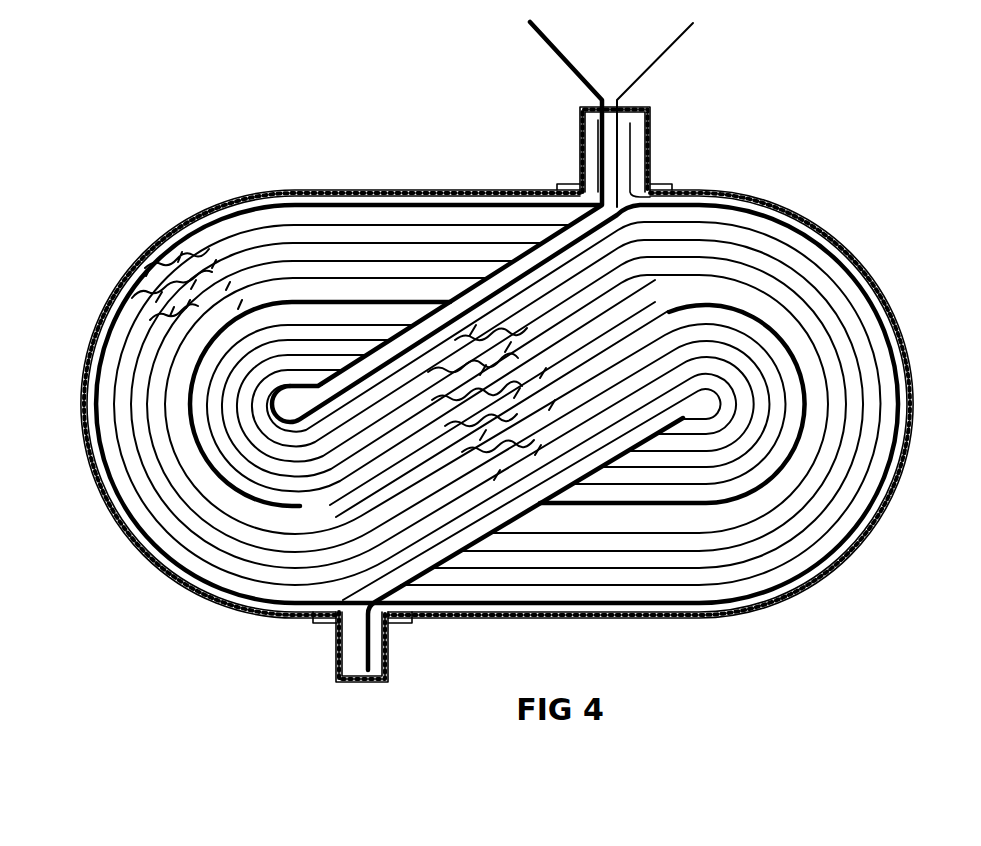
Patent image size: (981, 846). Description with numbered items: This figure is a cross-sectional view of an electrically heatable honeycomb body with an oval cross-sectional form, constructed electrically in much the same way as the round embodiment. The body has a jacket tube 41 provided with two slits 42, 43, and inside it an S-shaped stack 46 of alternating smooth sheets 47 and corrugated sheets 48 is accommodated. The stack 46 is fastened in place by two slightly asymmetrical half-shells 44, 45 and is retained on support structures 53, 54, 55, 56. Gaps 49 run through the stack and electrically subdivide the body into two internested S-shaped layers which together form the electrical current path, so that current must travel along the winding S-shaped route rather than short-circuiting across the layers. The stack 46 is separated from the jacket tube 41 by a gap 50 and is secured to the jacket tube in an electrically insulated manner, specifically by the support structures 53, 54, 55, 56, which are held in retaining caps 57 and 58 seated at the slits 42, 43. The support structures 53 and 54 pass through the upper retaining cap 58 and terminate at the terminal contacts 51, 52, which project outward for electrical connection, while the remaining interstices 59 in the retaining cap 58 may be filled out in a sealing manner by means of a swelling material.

The jacket tube 41 is at (214, 206).
The slit 42 is at (418, 622).
The slit 43 is at (650, 170).
The half-shell 44 is at (834, 246).
The half-shell 45 is at (100, 320).
The S-shaped stack 46 is at (296, 348).
The smooth sheets 47 is at (136, 272).
The corrugated sheets 48 is at (164, 246).
The gaps 49 is at (322, 468).
The gap 50 is at (800, 580).
The terminal contact 51 is at (548, 46).
The terminal contact 52 is at (686, 36).
The support structure 53 is at (382, 300).
The support structure 54 is at (370, 352).
The support structure 55 is at (604, 432).
The support structure 56 is at (481, 518).
The retaining cap 57 is at (339, 660).
The retaining cap 58 is at (582, 156).
The interstices 59 is at (636, 136).